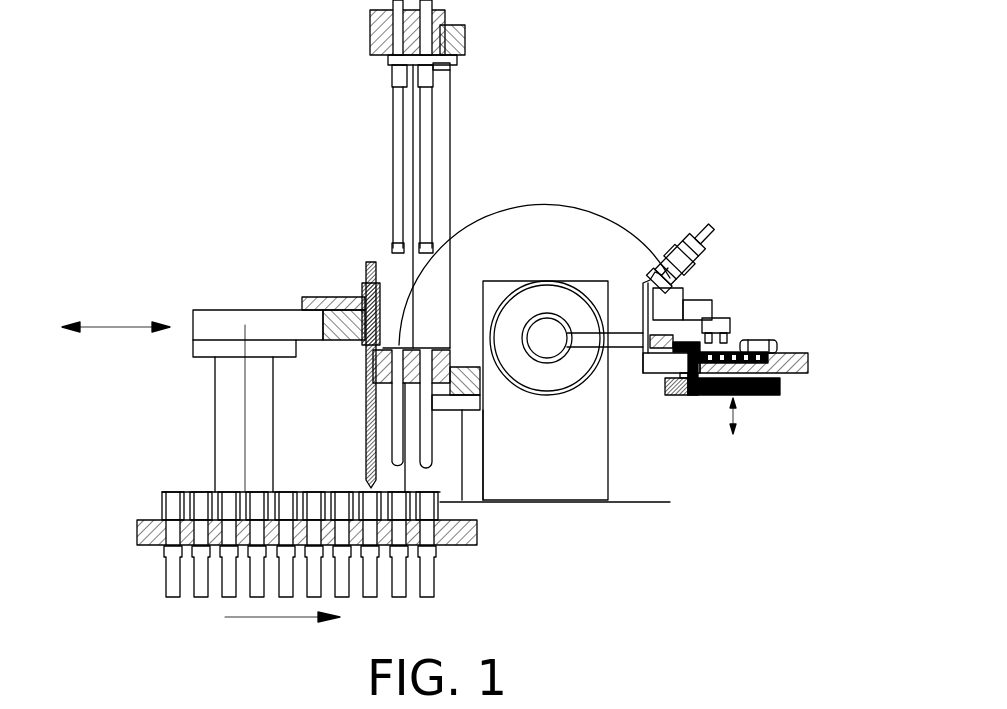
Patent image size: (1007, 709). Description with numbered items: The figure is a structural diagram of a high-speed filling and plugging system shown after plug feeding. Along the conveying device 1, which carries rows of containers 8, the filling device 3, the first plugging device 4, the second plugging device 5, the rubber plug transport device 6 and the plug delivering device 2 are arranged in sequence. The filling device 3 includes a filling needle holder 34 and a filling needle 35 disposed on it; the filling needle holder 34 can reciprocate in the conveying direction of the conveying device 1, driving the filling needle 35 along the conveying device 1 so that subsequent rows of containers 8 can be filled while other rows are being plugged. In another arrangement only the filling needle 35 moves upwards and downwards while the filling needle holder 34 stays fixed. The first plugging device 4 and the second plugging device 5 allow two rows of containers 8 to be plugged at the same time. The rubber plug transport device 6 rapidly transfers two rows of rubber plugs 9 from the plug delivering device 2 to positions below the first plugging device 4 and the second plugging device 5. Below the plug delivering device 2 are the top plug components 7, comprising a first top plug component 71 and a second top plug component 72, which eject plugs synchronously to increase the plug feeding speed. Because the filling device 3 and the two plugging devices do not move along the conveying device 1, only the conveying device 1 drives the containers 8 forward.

The conveying device 1 is at (140, 520).
The plug delivering device 2 is at (757, 397).
The filling device 3 is at (293, 335).
The filling needle 35 is at (363, 400).
The filling needle holder 34 is at (230, 310).
The first plugging device 4 is at (397, 163).
The second plugging device 5 is at (427, 182).
The rubber plug transport device 6 is at (610, 345).
The top plug components 7 is at (715, 400).
The first top plug component 71 is at (710, 345).
The second top plug component 72 is at (676, 373).
The containers 8 is at (178, 572).
The rubber plugs 9 is at (775, 341).